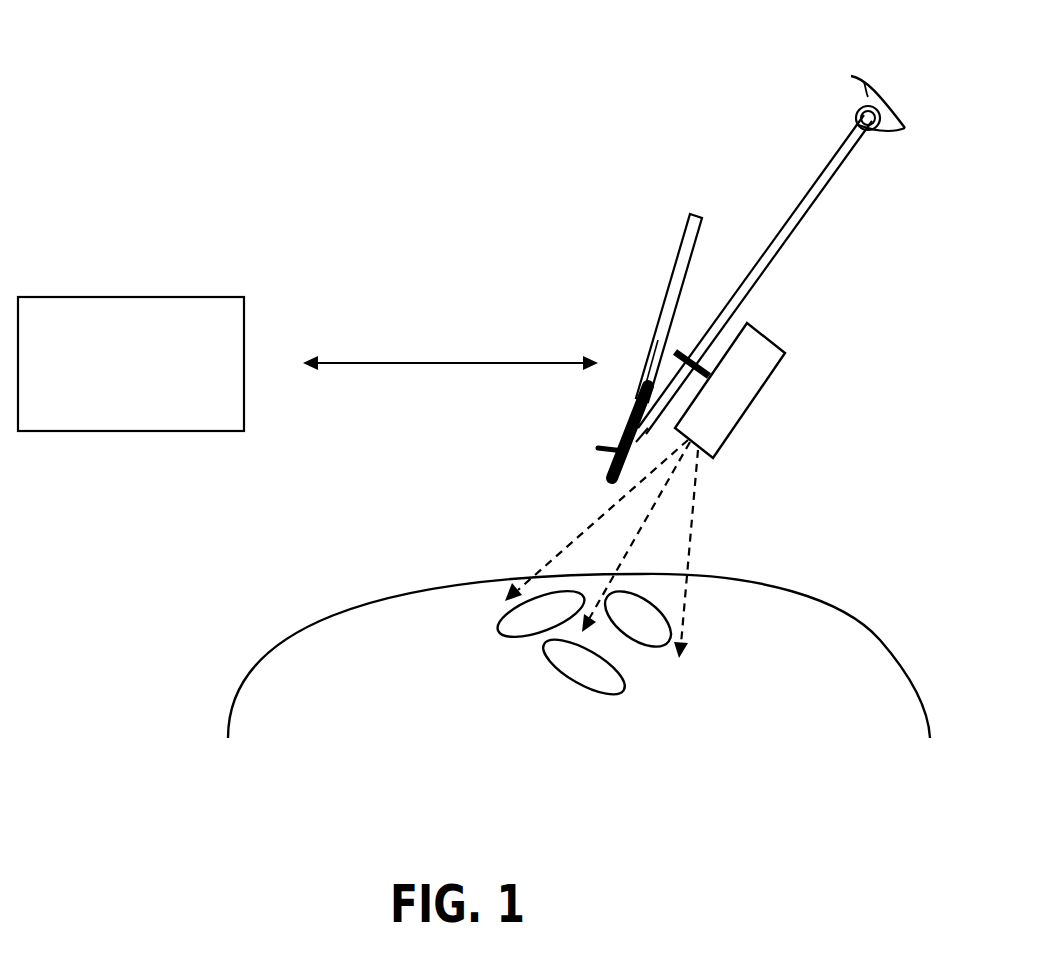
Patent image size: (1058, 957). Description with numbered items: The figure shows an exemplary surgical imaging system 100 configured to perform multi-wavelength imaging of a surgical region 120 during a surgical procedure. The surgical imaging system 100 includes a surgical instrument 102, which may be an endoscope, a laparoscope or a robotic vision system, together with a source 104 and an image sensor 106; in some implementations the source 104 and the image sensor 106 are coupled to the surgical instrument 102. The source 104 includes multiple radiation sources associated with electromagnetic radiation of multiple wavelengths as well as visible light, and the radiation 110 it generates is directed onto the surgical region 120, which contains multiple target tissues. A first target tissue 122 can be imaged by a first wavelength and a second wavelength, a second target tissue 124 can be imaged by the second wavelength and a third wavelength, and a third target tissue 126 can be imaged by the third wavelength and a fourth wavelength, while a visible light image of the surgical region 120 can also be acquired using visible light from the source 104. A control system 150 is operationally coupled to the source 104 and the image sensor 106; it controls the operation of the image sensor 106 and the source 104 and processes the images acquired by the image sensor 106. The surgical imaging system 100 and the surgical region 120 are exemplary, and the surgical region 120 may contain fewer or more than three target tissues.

The surgical imaging system 100 is at (232, 72).
The surgical instrument 102 is at (800, 203).
The source 104 is at (773, 341).
The image sensor 106 is at (672, 287).
The radiation 110 is at (677, 535).
The surgical region 120 is at (857, 665).
The first target tissue 122 is at (508, 621).
The second target tissue 124 is at (572, 656).
The third target tissue 126 is at (645, 634).
The control system 150 is at (153, 375).